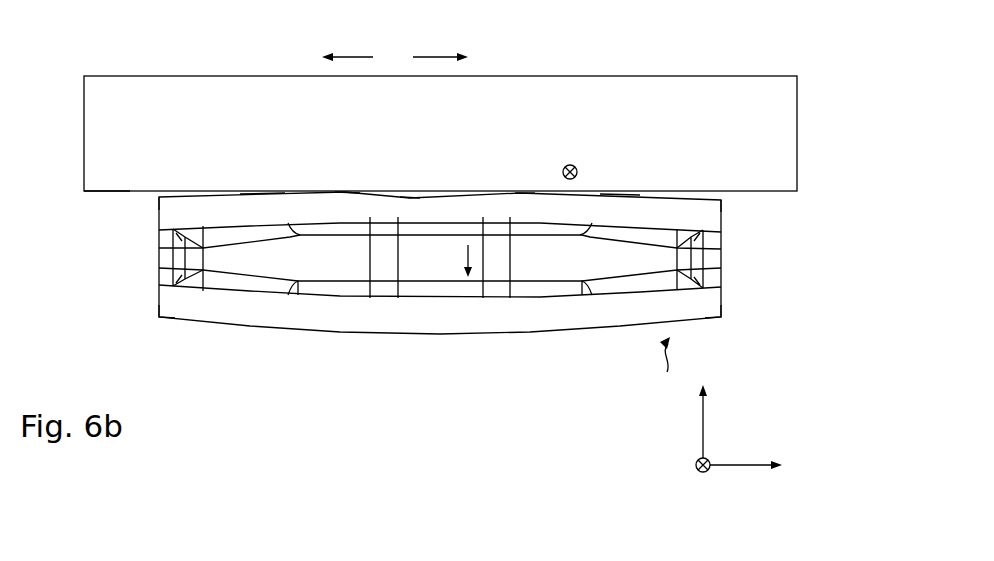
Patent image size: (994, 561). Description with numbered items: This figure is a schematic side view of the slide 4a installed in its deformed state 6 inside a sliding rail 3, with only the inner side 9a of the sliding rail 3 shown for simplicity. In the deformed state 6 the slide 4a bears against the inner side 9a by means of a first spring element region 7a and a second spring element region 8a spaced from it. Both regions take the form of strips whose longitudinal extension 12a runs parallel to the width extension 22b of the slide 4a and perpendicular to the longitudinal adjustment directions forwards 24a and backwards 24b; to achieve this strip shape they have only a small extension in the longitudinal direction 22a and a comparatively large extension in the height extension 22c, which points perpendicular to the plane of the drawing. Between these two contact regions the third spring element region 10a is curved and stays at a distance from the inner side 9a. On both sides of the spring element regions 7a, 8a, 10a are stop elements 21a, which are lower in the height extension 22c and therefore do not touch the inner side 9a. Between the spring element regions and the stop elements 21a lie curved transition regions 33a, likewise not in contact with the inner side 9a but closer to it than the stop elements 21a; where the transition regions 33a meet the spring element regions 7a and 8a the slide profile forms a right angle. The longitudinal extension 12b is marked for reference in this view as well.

The sliding rail 3 is at (743, 87).
The slide 4a is at (658, 363).
The deformed state 6 is at (752, 312).
The first spring element region 7a is at (353, 193).
The second spring element region 8a is at (528, 192).
The inner side of the sliding rail 9a is at (108, 192).
The third spring element region 10a is at (442, 197).
The longitudinal extension 12a is at (572, 164).
The longitudinal extension 12b is at (466, 258).
The stop elements 21a is at (180, 193).
The longitudinal direction 22a is at (738, 467).
The width extension 22b is at (696, 465).
The height extension 22c is at (702, 417).
The forwards direction 24a is at (440, 55).
The backwards direction 24b is at (350, 55).
The transition regions 33a is at (262, 193).